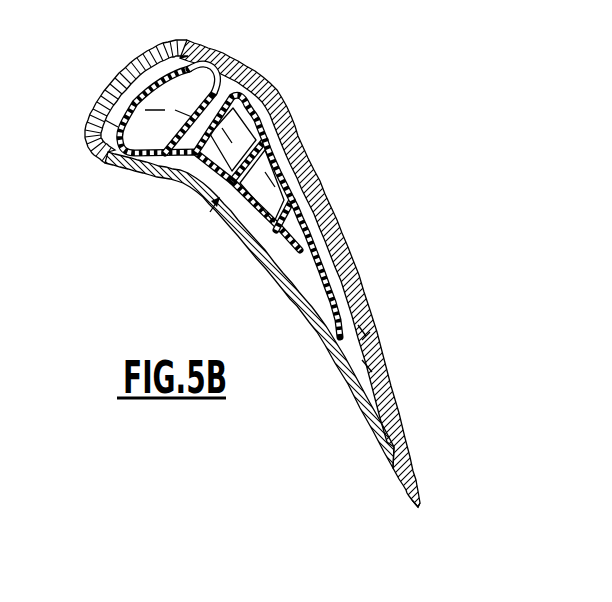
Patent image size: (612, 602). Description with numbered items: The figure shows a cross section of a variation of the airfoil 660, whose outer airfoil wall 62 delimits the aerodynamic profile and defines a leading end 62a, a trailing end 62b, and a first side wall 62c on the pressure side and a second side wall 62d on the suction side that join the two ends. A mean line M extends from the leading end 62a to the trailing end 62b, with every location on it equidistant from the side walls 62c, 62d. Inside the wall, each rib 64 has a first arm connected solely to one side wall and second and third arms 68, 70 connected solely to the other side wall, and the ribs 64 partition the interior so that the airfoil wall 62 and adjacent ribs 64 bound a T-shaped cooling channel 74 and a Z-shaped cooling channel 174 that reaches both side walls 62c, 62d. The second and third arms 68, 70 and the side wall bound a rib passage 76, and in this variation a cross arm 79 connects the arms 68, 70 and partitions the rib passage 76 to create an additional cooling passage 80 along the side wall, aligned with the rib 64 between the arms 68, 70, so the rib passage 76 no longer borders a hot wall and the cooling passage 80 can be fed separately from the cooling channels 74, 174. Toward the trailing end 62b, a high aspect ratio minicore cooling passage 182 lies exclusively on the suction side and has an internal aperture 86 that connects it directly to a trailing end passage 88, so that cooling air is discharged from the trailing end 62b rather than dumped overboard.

The airfoil wall 62 is at (267, 273).
The leading end 62a is at (97, 153).
The trailing end 62b is at (425, 497).
The first side wall 62c is at (315, 333).
The second side wall 62d is at (357, 273).
The rib 64 is at (270, 113).
The second arm 68 is at (282, 150).
The third arm 70 is at (195, 130).
The cooling channel 74 is at (234, 80).
The rib passage 76 is at (243, 88).
The cross arm 79 is at (297, 170).
The cooling passage 80 is at (277, 132).
The internal aperture 86 is at (373, 337).
The trailing end passage 88 is at (368, 367).
The cooling channel 174 is at (202, 217).
The cooling passage 182 is at (327, 247).
The airfoil 660 is at (340, 129).
The mean line M is at (330, 218).